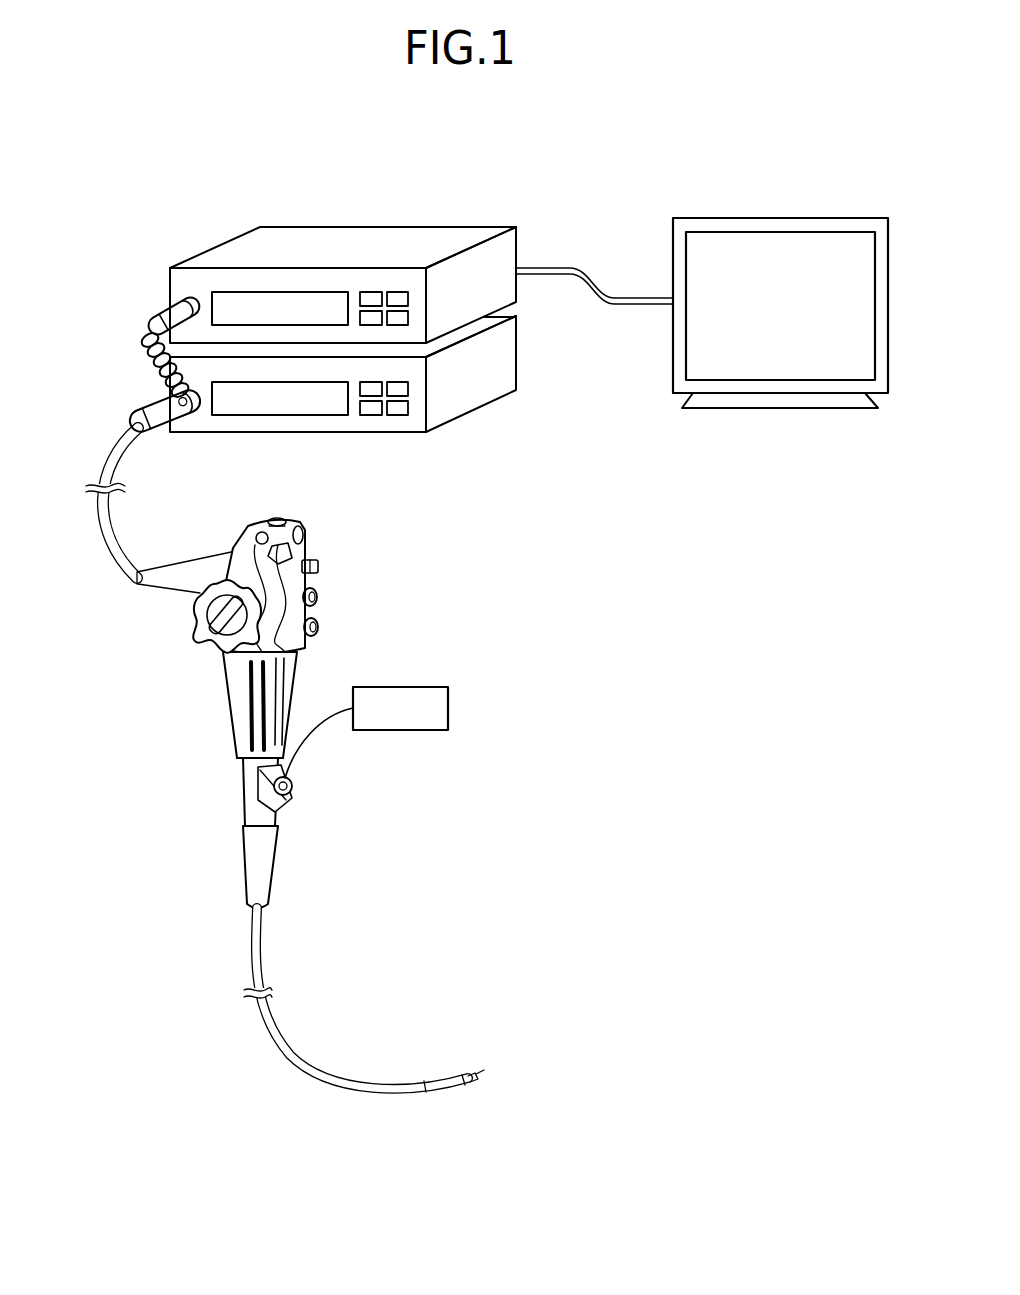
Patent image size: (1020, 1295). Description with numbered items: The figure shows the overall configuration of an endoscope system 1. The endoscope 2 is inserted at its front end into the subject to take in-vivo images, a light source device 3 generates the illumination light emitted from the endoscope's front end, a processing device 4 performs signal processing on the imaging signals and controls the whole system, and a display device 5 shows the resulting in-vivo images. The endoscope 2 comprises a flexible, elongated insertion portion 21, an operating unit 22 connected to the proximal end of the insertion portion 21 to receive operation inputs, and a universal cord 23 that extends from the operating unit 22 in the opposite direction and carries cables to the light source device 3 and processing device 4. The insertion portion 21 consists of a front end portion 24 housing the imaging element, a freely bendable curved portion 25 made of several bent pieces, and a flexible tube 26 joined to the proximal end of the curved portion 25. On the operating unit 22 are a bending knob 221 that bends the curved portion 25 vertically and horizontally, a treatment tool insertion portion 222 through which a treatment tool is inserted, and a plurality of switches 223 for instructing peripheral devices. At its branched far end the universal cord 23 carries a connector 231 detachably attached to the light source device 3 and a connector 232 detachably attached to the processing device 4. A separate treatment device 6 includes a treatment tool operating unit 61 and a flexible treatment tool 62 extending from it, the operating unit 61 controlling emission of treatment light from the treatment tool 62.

The endoscope system 1 is at (824, 136).
The endoscope 2 is at (372, 538).
The light source device 3 is at (505, 353).
The processing device 4 is at (484, 228).
The display device 5 is at (781, 226).
The treatment device 6 is at (425, 755).
The insertion portion 21 is at (325, 1054).
The operating unit 22 is at (263, 530).
The universal cord 23 is at (100, 524).
The front end portion 24 is at (468, 1088).
The curved portion 25 is at (443, 1078).
The flexible tube 26 is at (305, 1070).
The treatment tool operating unit 61 is at (413, 687).
The treatment tool 62 is at (338, 712).
The bending knob 221 is at (208, 632).
The treatment tool insertion portion 222 is at (296, 786).
The switches 223 is at (280, 505).
The connector 231 is at (178, 418).
The connector 232 is at (170, 312).